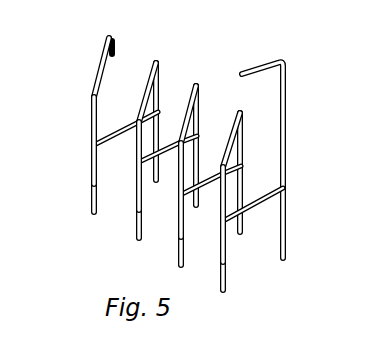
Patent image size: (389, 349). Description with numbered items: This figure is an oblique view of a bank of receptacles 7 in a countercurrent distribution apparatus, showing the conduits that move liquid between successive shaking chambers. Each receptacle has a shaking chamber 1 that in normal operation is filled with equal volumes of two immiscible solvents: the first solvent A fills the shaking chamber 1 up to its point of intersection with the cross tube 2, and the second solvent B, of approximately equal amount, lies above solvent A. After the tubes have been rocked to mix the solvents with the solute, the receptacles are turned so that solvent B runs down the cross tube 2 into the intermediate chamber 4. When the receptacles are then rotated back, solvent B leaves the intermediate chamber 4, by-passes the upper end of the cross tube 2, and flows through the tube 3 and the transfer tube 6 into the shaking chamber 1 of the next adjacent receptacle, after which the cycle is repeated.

The shaking chamber 1 is at (245, 134).
The cross tube 2 is at (105, 146).
The tube 3 is at (91, 118).
The intermediate chamber 4 is at (90, 183).
The transfer tube 6 is at (98, 62).
The bank of receptacles 7 is at (186, 155).
The first solvent A is at (290, 236).
The second solvent B is at (289, 140).